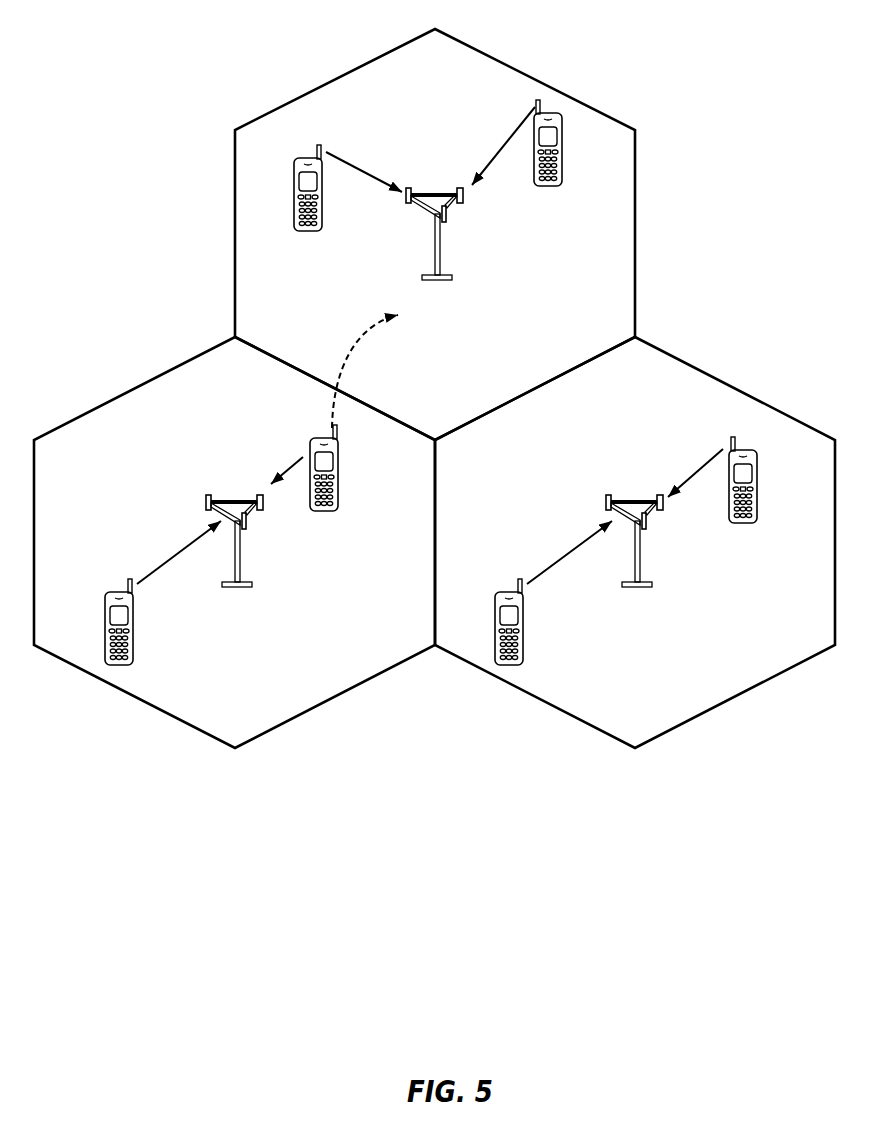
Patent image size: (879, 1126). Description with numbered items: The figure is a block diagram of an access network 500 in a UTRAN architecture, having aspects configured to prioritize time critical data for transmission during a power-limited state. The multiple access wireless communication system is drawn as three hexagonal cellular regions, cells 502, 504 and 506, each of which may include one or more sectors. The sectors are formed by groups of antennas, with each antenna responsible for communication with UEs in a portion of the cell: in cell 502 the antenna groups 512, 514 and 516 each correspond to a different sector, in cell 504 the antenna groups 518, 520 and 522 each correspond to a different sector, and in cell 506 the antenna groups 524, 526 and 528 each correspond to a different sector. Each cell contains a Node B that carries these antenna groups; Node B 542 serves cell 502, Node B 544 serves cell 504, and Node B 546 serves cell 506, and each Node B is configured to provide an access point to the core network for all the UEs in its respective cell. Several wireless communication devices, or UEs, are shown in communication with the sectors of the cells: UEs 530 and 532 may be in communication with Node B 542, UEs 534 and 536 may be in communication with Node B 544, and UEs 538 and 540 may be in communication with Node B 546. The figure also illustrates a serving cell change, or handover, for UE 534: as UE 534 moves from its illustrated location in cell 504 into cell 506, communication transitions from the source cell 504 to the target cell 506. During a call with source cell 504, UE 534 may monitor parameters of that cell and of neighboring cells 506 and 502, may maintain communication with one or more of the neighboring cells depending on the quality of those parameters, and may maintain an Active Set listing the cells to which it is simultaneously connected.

The access network 500 is at (745, 58).
The cell 502 is at (735, 388).
The cell 504 is at (112, 398).
The cell 506 is at (518, 69).
The antenna group 512 is at (607, 496).
The antenna group 514 is at (646, 529).
The antenna group 516 is at (662, 511).
The antenna group 518 is at (246, 529).
The antenna group 520 is at (262, 511).
The antenna group 522 is at (207, 496).
The antenna group 524 is at (408, 204).
The antenna group 526 is at (446, 222).
The antenna group 528 is at (461, 204).
The UE 530 is at (757, 472).
The UE 532 is at (495, 615).
The UE 534 is at (340, 443).
The UE 536 is at (105, 615).
The UE 538 is at (307, 231).
The UE 540 is at (551, 187).
The Node B 542 is at (637, 499).
The Node B 544 is at (237, 499).
The Node B 546 is at (437, 192).